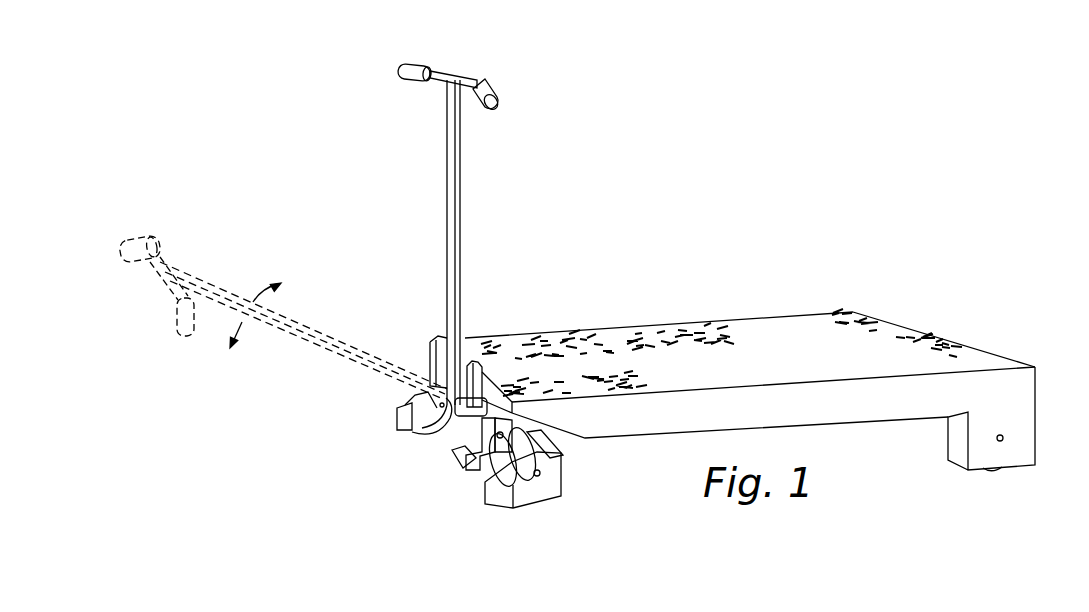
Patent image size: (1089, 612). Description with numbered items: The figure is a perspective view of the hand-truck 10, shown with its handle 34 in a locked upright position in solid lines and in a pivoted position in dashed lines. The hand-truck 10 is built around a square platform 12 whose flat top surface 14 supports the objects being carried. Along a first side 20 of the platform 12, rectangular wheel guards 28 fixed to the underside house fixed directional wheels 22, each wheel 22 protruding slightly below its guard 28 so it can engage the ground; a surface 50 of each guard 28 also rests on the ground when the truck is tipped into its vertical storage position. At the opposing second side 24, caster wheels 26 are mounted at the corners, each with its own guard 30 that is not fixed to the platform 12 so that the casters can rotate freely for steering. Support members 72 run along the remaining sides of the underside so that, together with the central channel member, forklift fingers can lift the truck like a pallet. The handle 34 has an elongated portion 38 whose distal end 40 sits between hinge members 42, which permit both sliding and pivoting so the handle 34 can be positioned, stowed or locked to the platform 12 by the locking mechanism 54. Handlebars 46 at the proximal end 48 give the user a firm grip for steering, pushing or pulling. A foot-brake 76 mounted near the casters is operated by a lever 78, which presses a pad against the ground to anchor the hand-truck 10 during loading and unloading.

The hand-truck 10 is at (655, 226).
The platform 12 is at (700, 340).
The flat top surface 14 is at (953, 347).
The first side 20 is at (875, 316).
The fixed directional wheels 22 is at (987, 466).
The second side 24 is at (437, 338).
The caster wheels 26 is at (428, 385).
The wheel guards 28 is at (1030, 427).
The guard 30 is at (398, 410).
The handle 34 is at (470, 66).
The elongated portion 38 is at (465, 147).
The distal end 40 is at (434, 430).
The hinge members 42 is at (507, 401).
The handlebars 46 is at (421, 66).
The proximal end 48 is at (437, 90).
The surface 50 is at (1044, 391).
The locking mechanism 54 is at (491, 364).
The support members 72 is at (651, 432).
The foot-brake 76 is at (478, 476).
The lever 78 is at (456, 458).